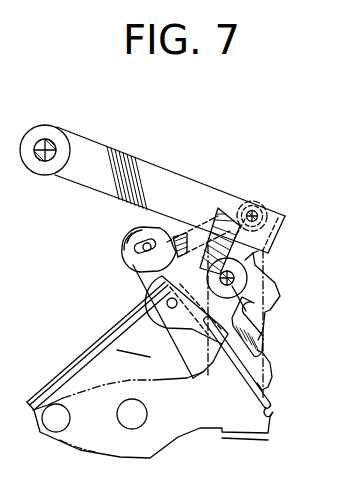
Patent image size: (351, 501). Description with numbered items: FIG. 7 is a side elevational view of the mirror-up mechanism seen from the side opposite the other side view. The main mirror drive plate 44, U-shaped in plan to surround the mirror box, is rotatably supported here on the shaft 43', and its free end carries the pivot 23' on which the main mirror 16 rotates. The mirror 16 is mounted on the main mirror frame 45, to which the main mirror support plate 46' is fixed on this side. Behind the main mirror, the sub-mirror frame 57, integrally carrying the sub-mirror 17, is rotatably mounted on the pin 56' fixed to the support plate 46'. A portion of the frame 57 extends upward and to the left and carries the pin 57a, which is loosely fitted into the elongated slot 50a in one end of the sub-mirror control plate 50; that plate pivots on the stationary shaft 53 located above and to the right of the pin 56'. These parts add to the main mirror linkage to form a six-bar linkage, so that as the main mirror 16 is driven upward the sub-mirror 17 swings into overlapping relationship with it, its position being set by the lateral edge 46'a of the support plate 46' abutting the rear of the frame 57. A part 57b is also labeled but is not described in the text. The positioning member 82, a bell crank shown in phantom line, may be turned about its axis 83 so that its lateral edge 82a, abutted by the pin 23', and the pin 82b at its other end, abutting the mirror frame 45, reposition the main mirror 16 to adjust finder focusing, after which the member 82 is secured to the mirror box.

The shaft 43' is at (61, 126).
The mirror drive plate 44 is at (134, 160).
The lateral edge 82a is at (223, 207).
The pivot 23' is at (265, 201).
The elongated slot 50a is at (120, 237).
The pin 57a is at (116, 248).
The sub-mirror control plate 50 is at (137, 263).
The main mirror 16 is at (95, 344).
The pin 56' is at (179, 311).
The mirror frame 45 is at (92, 358).
The sub-mirror frame 57 is at (185, 345).
The sub-mirror 17 is at (230, 372).
The main mirror support plate 46' is at (260, 322).
The stationary shaft 53 is at (260, 328).
The lateral edge 46'a is at (290, 370).
The hook 57b is at (273, 410).
The pin 82b is at (52, 430).
The axis 83 is at (127, 429).
The positioning member 82 is at (178, 435).